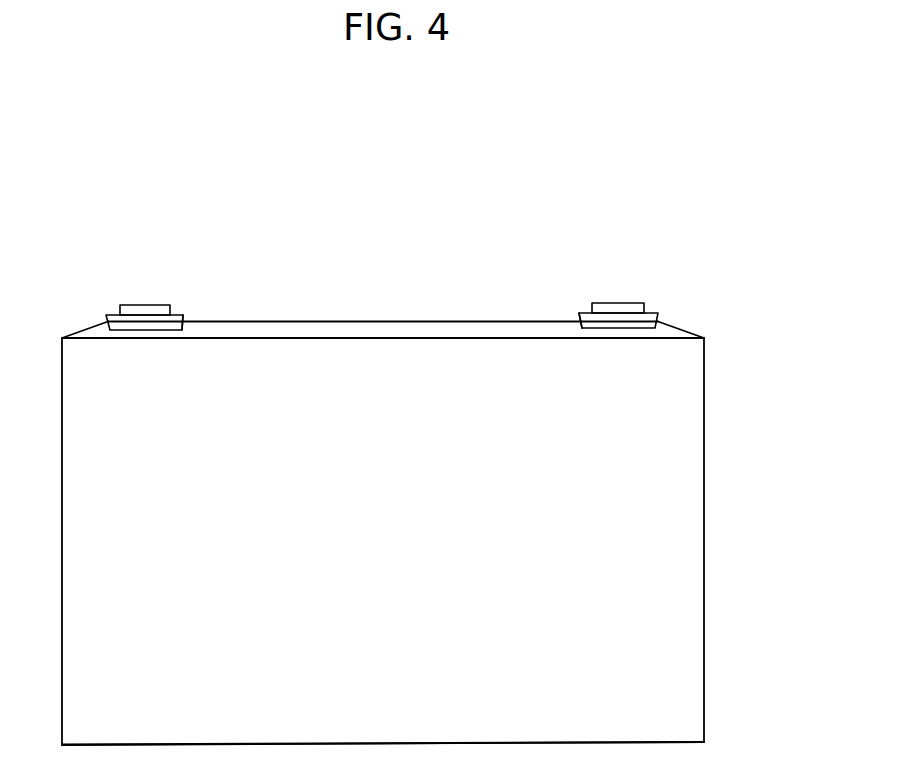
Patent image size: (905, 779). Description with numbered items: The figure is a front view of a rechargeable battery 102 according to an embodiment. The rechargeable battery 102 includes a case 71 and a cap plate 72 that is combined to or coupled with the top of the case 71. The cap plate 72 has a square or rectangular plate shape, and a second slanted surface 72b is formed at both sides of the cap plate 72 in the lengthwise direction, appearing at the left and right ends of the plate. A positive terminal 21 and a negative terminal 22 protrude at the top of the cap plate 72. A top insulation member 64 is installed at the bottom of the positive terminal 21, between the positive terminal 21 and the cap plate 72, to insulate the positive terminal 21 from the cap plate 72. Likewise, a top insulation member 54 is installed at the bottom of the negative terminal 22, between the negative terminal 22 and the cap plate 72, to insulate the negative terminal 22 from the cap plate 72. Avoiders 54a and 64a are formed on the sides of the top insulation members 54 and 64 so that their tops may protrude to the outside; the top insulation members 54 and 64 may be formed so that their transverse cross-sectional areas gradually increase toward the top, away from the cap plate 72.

The rechargeable battery 102 is at (402, 204).
The case 71 is at (704, 488).
The cap plate 72 is at (424, 321).
The second slanted surface 72b is at (90, 329).
The negative terminal 22 is at (138, 305).
The top insulation member 54 is at (178, 315).
The avoider 54a is at (184, 320).
The positive terminal 21 is at (625, 303).
The top insulation member 64 is at (586, 313).
The avoider 64a is at (578, 314).